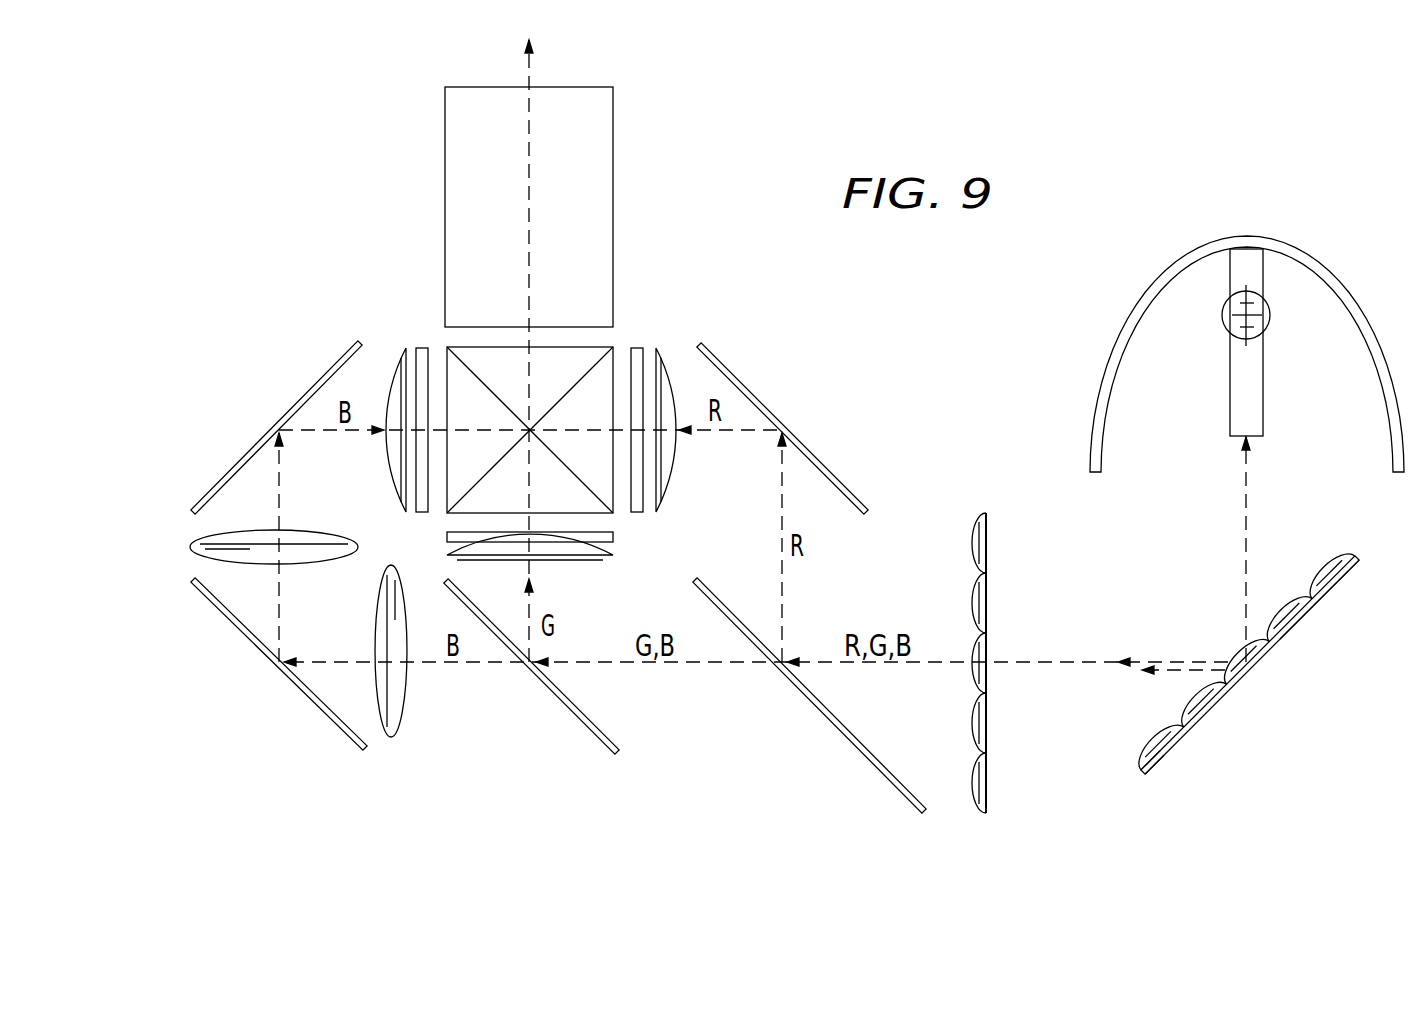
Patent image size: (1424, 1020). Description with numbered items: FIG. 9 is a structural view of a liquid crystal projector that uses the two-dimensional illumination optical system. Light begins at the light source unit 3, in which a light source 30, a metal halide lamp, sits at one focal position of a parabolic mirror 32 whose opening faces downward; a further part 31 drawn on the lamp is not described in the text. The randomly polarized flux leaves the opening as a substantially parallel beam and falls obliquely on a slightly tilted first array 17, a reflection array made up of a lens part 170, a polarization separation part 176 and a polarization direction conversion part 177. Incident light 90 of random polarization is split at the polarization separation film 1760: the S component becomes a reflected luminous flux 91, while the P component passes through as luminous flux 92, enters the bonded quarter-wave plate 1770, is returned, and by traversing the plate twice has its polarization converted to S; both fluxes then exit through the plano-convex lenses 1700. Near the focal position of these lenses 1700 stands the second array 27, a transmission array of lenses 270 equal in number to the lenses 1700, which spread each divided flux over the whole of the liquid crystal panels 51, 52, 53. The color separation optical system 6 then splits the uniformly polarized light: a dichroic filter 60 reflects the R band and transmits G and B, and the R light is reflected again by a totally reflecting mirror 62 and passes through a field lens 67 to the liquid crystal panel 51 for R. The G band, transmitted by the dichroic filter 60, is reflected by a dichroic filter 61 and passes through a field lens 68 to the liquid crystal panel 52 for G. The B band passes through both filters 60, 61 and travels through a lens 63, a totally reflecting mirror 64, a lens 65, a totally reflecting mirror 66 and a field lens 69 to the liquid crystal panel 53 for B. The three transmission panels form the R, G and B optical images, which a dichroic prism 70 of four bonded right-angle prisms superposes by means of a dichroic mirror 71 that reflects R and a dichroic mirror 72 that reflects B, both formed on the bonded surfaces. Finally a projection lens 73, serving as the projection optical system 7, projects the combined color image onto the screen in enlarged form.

The light source unit 3 is at (1284, 222).
The light source 30 is at (1270, 326).
The lamp tube 31 is at (1250, 441).
The parabolic mirror 32 is at (1139, 344).
The color separation optical system 6 is at (651, 786).
The projection optical system 7 is at (430, 192).
The first array 17 is at (1293, 709).
The second array 27 is at (953, 708).
The liquid crystal panel 51 is at (637, 347).
The liquid crystal panel 52 is at (614, 539).
The liquid crystal panel 53 is at (421, 347).
The dichroic filter 60 is at (829, 718).
The dichroic filter 61 is at (545, 683).
The totally reflecting mirror 62 is at (756, 402).
The lens 63 is at (407, 690).
The totally reflecting mirror 64 is at (295, 684).
The lens 65 is at (292, 563).
The totally reflecting mirror 66 is at (290, 412).
The field lens 67 is at (677, 452).
The field lens 68 is at (580, 571).
The field lens 69 is at (385, 452).
The dichroic prism 70 is at (530, 392).
The dichroic mirror 71 is at (517, 414).
The dichroic mirror 72 is at (542, 414).
The projection lens 73 is at (613, 205).
The light 90 is at (1243, 526).
The luminous flux 91 is at (1178, 659).
The luminous flux 92 is at (1170, 677).
The lens part 170 is at (1127, 770).
The polarization separation part 176 is at (1137, 776).
The polarization direction conversion part 177 is at (1146, 781).
The transmission lens 270 is at (968, 542).
The plano-convex lens 1700 is at (1337, 560).
The polarization separation film 1760 is at (1215, 700).
The quarter-wave plate 1770 is at (1313, 603).